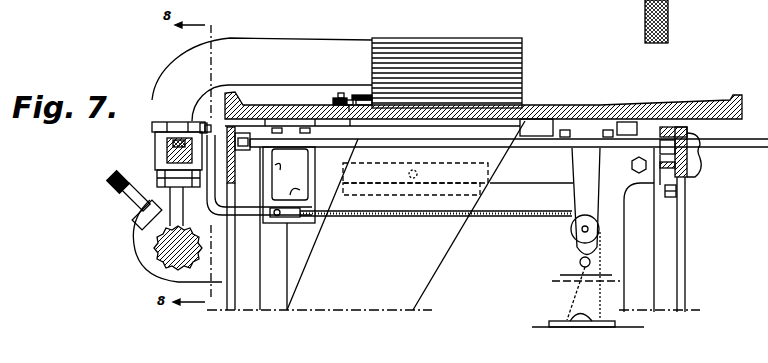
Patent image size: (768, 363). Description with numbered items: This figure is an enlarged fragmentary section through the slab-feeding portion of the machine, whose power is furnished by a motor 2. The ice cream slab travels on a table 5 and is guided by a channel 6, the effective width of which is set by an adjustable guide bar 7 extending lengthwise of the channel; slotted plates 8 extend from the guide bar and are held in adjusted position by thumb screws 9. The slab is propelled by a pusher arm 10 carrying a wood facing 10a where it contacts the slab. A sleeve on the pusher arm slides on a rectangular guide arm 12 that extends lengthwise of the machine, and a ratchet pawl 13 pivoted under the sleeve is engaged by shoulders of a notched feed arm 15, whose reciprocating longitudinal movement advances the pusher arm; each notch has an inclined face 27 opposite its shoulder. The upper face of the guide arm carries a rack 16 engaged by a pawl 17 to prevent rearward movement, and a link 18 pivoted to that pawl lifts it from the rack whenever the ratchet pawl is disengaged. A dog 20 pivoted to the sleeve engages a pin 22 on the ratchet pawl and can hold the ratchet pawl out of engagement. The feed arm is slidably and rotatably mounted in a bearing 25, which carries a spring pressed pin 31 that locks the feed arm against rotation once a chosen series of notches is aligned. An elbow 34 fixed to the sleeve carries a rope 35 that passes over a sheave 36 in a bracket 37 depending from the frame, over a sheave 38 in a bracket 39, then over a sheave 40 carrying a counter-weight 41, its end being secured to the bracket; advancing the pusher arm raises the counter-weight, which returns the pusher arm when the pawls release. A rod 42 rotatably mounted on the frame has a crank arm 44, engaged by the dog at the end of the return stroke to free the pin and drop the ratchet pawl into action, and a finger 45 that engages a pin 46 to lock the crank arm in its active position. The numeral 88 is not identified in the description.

The motor 2 is at (760, 20).
The table 5 is at (664, 108).
The channel 6 is at (522, 110).
The adjustable guide bar 7 is at (358, 96).
The slotted plates 8 is at (333, 103).
The thumb screws 9 is at (343, 96).
The pusher arm 10 is at (318, 46).
The wood facing 10a is at (465, 57).
The rectangular guide arm 12 is at (157, 152).
The ratchet pawl 13 is at (180, 208).
The feed arm 15 is at (173, 257).
The rack 16 is at (177, 142).
The pawl 17 is at (180, 124).
The link 18 is at (155, 162).
The dog 20 is at (141, 8).
The pin 22 is at (736, 9).
The bearing 25 is at (147, 245).
The inclined face 27 is at (411, 12).
The spring pressed pin 31 is at (112, 184).
The elbow 34 is at (245, 218).
The rope 35 is at (393, 217).
The sheave 36 is at (302, 220).
The bracket 37 is at (312, 158).
The sheave 38 is at (572, 236).
The bracket 39 is at (580, 162).
The sheave 40 is at (567, 317).
The counter-weight 41 is at (547, 322).
The rod 42 is at (382, 143).
The crank arm 44 is at (256, 169).
The finger 45 is at (707, 163).
The pin 46 is at (687, 181).
The post 88 is at (636, 21).